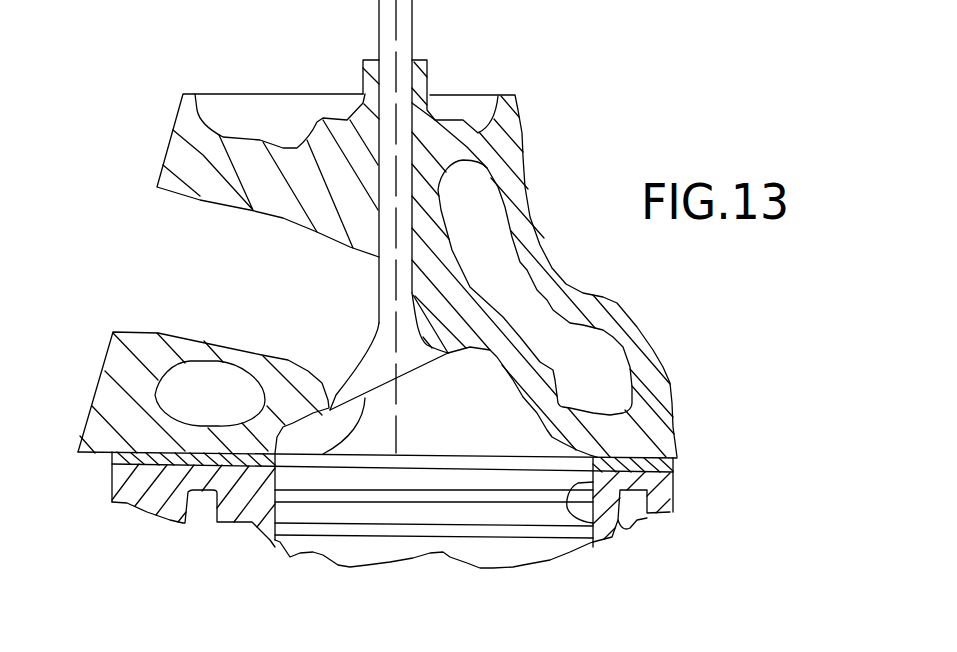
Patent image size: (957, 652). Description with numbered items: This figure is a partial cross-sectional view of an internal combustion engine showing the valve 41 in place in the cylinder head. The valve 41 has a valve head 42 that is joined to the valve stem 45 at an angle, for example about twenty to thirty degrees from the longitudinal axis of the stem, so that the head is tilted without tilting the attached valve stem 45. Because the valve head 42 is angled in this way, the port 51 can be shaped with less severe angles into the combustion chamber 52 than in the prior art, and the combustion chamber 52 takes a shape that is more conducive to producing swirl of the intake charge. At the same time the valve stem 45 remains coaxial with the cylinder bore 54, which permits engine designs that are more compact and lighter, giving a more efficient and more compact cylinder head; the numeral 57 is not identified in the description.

The valve 41 is at (378, 32).
The valve head 42 is at (380, 387).
The valve stem 45 is at (407, 107).
The port 51 is at (187, 272).
The combustion chamber 52 is at (507, 398).
The cylinder bore 54 is at (593, 542).
The cylinder head wall 57 is at (203, 155).